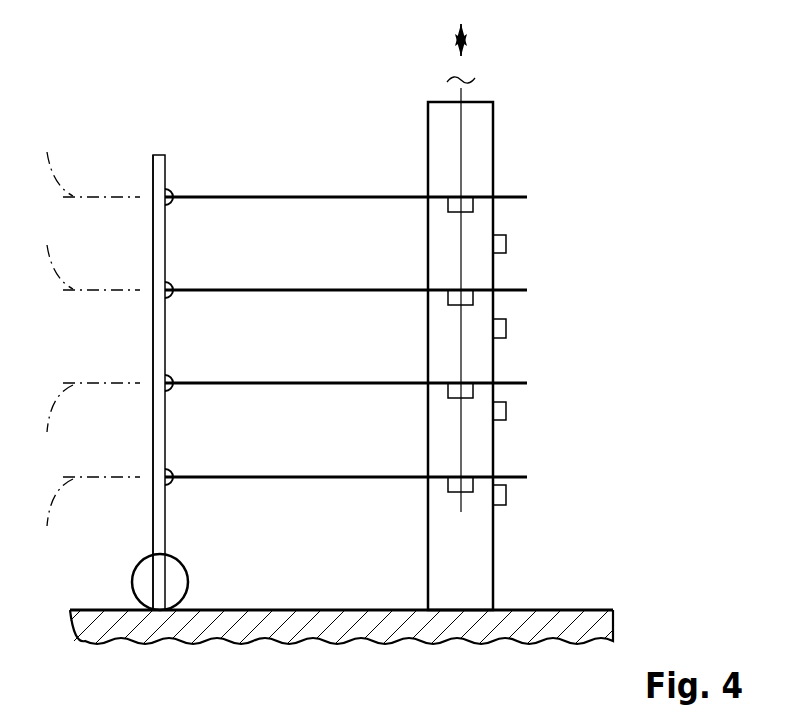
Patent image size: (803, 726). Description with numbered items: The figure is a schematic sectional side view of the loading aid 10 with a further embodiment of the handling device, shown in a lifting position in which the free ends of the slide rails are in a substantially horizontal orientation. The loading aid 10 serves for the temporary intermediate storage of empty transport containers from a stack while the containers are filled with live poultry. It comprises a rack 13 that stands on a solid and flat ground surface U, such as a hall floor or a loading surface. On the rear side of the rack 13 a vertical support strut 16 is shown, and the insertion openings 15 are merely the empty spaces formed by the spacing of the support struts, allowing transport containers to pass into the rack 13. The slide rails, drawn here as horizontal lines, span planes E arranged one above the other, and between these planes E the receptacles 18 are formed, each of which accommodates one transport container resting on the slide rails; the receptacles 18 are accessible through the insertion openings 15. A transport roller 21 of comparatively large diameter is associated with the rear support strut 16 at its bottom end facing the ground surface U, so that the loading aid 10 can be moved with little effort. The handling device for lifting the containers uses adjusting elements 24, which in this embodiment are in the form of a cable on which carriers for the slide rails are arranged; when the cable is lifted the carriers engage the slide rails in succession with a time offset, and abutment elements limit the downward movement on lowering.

The loading aid 10 is at (612, 86).
The rack 13 is at (147, 338).
The insertion opening 15 is at (525, 152).
The vertical support strut 16 is at (161, 247).
The receptacle 18 is at (363, 173).
The transport roller 21 is at (140, 582).
The adjusting element 24 is at (472, 128).
The plane E is at (88, 339).
The ground surface U is at (531, 622).